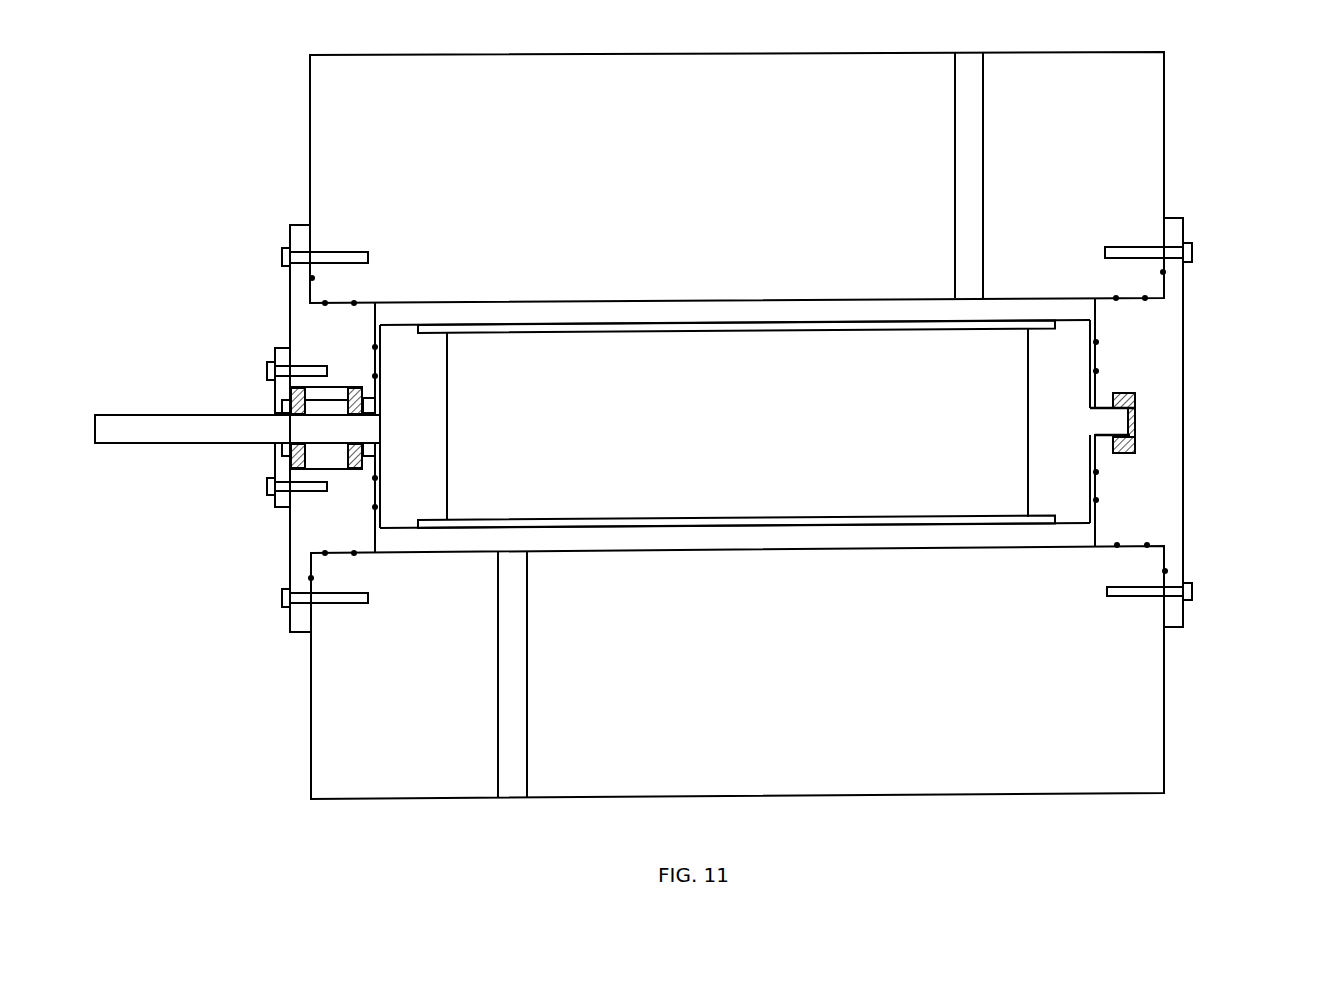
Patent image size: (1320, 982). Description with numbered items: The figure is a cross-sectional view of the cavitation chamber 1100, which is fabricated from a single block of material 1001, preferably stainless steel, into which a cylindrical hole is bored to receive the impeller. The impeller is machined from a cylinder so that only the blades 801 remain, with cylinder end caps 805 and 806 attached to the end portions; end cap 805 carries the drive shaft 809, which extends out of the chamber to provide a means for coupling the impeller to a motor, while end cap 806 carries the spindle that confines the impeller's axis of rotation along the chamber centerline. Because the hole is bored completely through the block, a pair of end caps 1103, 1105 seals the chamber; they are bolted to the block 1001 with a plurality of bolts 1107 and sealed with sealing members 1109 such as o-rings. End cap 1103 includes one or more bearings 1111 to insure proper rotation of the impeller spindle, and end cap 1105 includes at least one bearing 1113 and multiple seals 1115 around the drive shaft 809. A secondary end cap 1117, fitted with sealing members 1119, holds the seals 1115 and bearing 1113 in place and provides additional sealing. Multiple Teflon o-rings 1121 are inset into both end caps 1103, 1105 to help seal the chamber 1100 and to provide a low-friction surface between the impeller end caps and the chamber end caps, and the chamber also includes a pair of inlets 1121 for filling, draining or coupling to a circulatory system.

The chamber 1100 is at (1196, 178).
The block of material 1001 is at (766, 187).
The Teflon o-rings / chamber inlets 1121 is at (968, 68).
The bolts 1107 is at (282, 256).
The end cap 1105 is at (305, 326).
The end cap 1103 is at (1172, 363).
The secondary end cap 1117 is at (278, 391).
The sealing members 1119 is at (278, 505).
The bearing 1113 is at (307, 398).
The seals 1115 is at (375, 405).
The bearings 1111 is at (1135, 400).
The sealing members 1109 is at (311, 578).
The drive shaft 809 is at (145, 430).
The cylinder end cap 805 is at (432, 355).
The cylinder end cap 806 is at (1042, 387).
The blades 801 is at (655, 333).